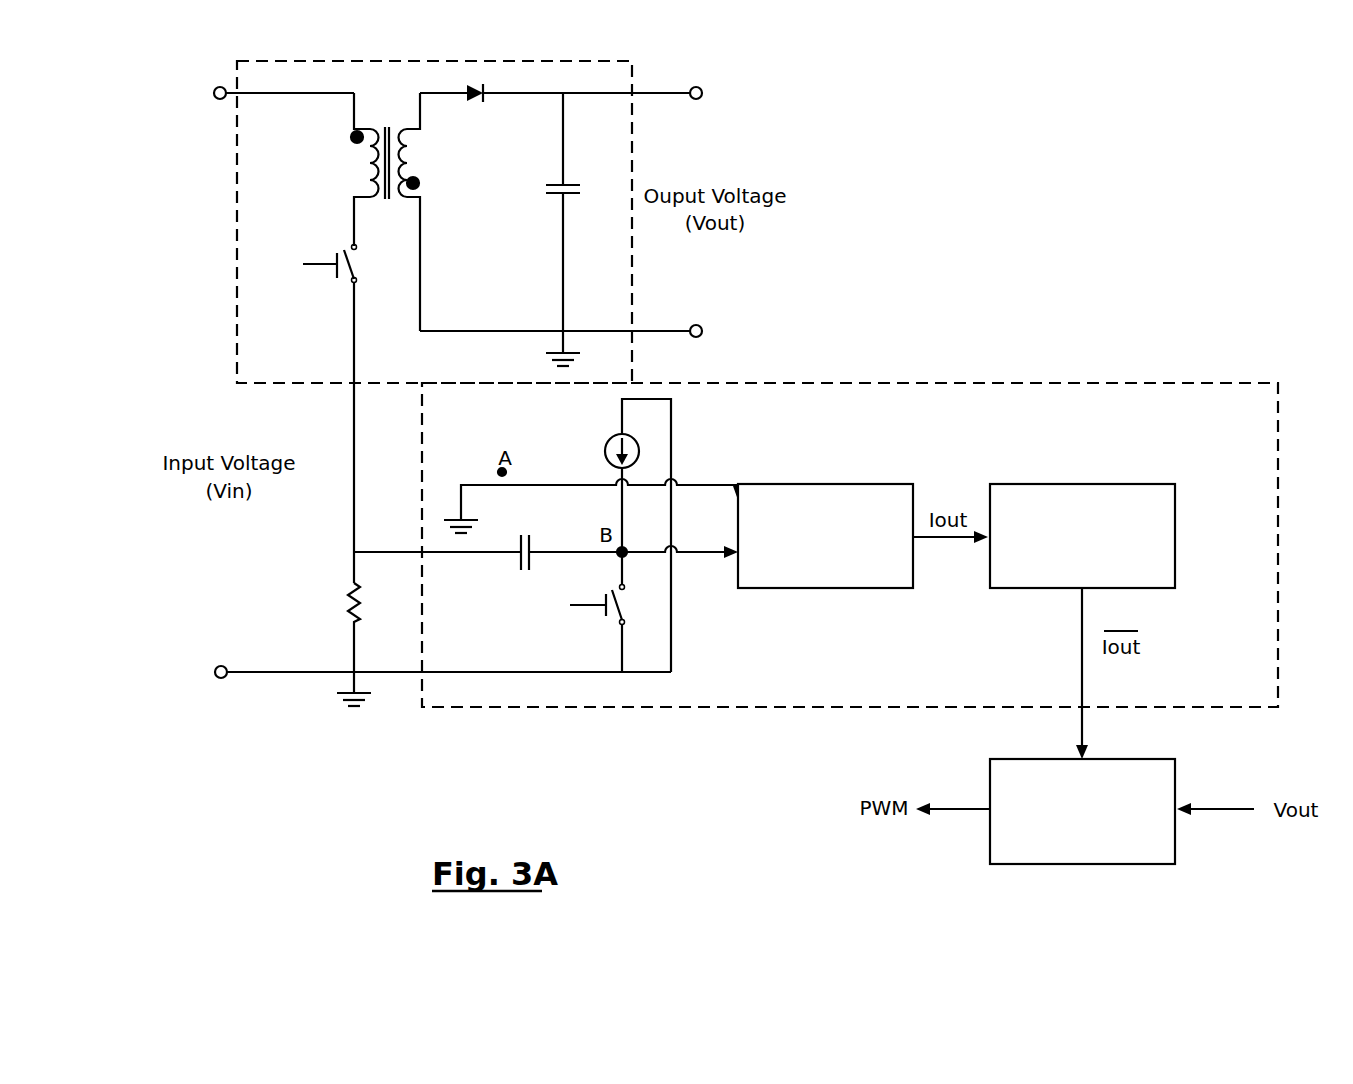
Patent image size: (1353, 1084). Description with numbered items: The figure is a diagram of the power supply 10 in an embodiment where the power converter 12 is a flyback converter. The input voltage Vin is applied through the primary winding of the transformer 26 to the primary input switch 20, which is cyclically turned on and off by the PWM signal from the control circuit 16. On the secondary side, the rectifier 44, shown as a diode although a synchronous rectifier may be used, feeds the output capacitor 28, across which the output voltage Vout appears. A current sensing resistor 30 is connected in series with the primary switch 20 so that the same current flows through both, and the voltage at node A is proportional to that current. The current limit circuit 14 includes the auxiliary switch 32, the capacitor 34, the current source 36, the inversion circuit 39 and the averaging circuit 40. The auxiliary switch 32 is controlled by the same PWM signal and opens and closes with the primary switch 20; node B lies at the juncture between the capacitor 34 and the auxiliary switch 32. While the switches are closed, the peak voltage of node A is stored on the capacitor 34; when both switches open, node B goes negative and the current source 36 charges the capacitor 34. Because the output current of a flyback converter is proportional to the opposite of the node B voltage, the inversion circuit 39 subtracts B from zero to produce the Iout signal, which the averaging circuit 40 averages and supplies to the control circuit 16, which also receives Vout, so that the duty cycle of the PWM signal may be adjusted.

The power supply 10 is at (1004, 186).
The DC/DC converter 12 is at (600, 57).
The current limit circuit 14 is at (1030, 382).
The control circuit 16 is at (1180, 773).
The primary input switch 20 is at (340, 284).
The transformer 26 is at (370, 163).
The output capacitor 28 is at (550, 196).
The current sensing resistor 30 is at (343, 612).
The auxiliary switch 32 is at (614, 619).
The capacitor 34 is at (513, 560).
The current source 36 is at (606, 447).
The inversion circuit 39 is at (831, 484).
The averaging circuit 40 is at (1087, 483).
The rectifier 44 is at (477, 97).